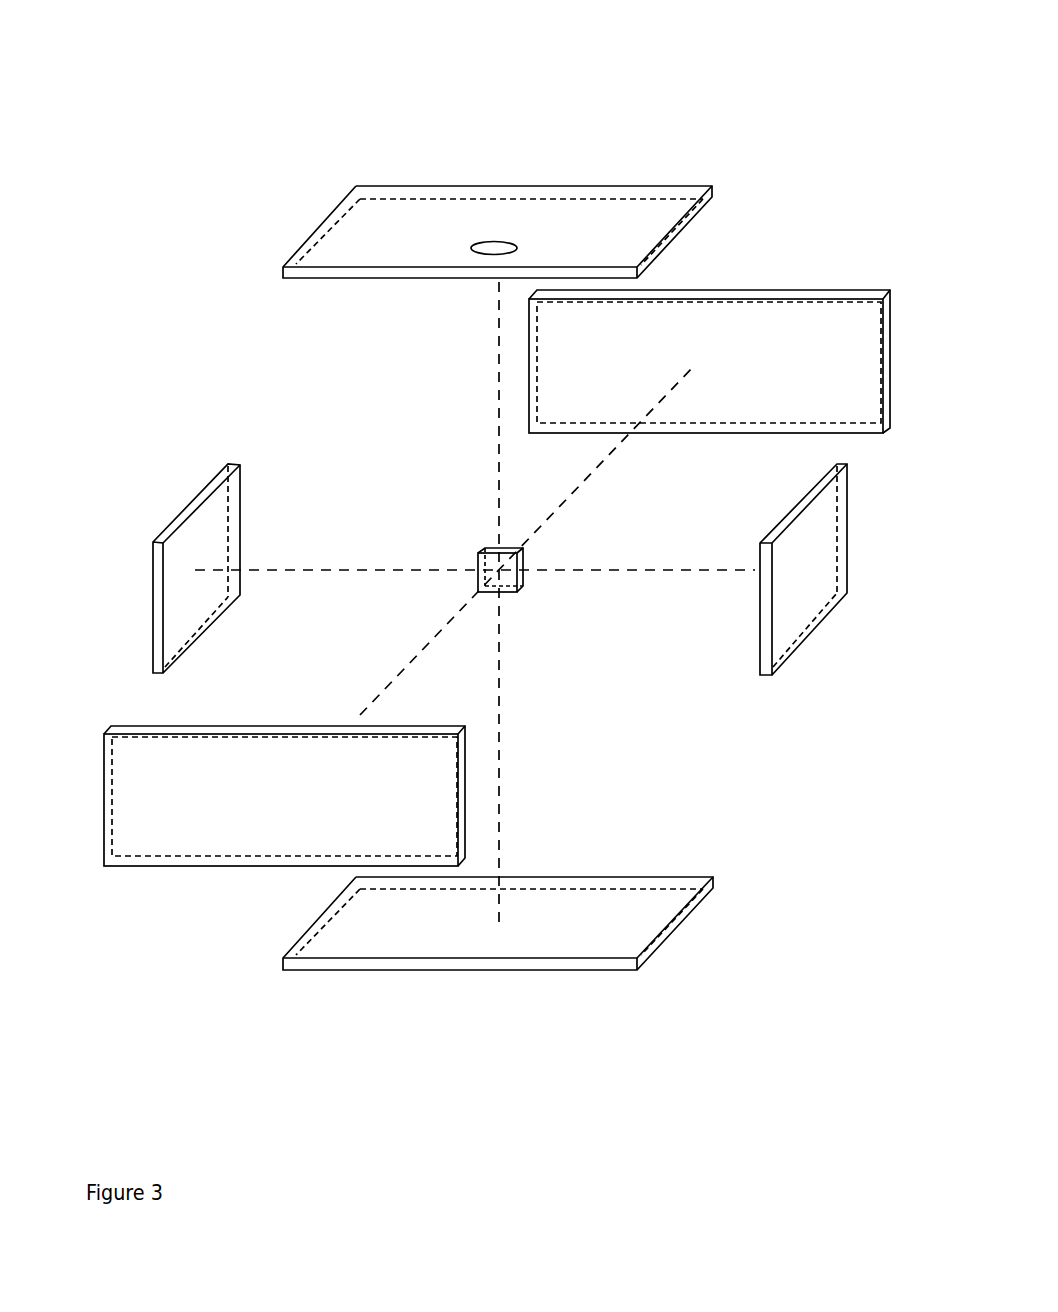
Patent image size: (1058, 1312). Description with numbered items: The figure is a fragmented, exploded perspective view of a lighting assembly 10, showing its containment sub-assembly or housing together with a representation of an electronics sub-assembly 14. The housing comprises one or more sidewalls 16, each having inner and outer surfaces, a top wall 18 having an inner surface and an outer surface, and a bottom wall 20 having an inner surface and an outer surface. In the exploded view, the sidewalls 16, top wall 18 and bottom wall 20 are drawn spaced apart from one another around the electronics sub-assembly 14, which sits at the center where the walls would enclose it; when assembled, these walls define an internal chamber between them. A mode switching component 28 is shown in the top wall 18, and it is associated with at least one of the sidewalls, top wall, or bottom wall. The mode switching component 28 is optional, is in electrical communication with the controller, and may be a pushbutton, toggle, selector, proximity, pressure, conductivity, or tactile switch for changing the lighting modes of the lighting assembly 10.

The lighting assembly 10 is at (838, 84).
The electronics sub-assembly 14 is at (463, 537).
The sidewalls 16 is at (765, 276).
The top wall 18 is at (498, 172).
The bottom wall 20 is at (521, 991).
The mode switching component 28 is at (496, 251).